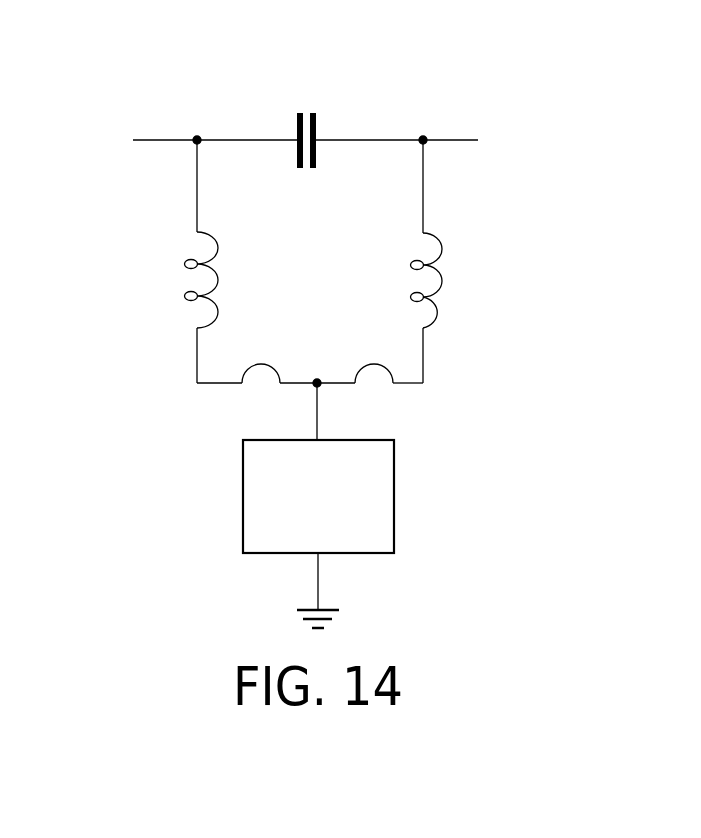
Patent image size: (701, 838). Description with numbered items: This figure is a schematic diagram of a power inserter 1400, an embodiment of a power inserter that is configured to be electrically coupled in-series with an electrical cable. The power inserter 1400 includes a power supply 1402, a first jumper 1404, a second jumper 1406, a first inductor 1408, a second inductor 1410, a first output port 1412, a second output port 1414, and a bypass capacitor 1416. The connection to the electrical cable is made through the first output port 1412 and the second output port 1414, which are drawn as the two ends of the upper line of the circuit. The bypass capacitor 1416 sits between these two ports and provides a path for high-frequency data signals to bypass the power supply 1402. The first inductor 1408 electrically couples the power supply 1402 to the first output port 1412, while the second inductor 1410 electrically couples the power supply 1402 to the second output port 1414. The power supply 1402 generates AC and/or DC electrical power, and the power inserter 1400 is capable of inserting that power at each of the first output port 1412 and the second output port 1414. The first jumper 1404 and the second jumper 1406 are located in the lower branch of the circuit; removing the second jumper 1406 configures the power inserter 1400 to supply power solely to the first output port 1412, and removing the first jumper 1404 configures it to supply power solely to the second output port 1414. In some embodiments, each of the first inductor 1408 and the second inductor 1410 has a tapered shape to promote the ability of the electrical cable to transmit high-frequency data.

The power inserter 1400 is at (543, 72).
The power supply 1402 is at (295, 521).
The first jumper 1404 is at (265, 343).
The second jumper 1406 is at (377, 343).
The first inductor 1408 is at (167, 252).
The second inductor 1410 is at (468, 253).
The first output port 1412 is at (207, 120).
The second output port 1414 is at (430, 122).
The bypass capacitor 1416 is at (337, 102).